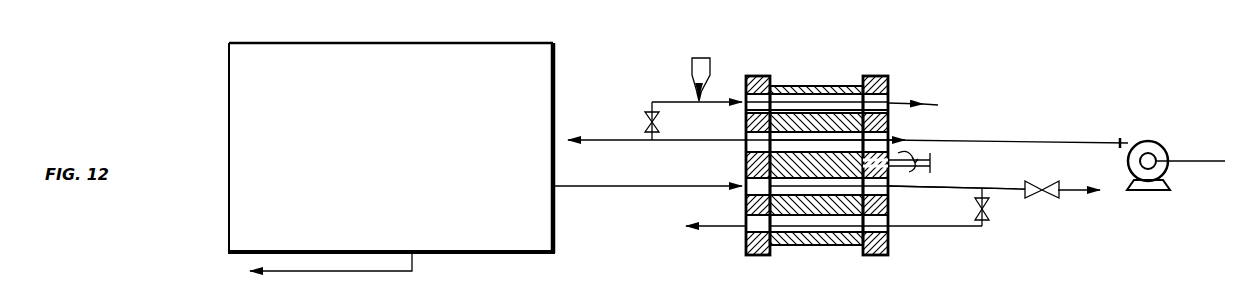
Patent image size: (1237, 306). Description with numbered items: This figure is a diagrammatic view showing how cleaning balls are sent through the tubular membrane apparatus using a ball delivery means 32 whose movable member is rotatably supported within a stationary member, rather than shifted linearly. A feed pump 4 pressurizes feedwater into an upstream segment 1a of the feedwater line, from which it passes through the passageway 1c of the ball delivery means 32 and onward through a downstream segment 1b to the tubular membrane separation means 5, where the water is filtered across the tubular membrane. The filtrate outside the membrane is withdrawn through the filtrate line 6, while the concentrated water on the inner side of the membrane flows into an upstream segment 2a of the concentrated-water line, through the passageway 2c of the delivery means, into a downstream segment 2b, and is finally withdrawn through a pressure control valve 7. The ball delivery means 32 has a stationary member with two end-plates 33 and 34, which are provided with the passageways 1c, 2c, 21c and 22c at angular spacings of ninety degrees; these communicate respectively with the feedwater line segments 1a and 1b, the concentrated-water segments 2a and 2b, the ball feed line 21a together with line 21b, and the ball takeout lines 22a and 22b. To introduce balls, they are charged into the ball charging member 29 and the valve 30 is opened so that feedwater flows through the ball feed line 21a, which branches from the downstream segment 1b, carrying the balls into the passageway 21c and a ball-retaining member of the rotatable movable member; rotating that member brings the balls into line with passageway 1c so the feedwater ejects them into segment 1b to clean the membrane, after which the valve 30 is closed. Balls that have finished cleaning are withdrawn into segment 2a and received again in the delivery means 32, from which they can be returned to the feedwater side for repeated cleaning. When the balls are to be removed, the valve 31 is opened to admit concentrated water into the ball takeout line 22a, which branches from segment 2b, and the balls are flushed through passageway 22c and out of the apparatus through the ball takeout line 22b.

The tubular membrane separation means 5 is at (226, 60).
The filtrate line 6 is at (353, 273).
The downstream segment of the feedwater line 1b is at (599, 140).
The valve 30 is at (646, 112).
The ball feed line 21a is at (673, 100).
The ball charging member 29 is at (711, 70).
The ball delivery means 32 is at (825, 84).
The end-plate 33 is at (765, 76).
The end-plate 34 is at (880, 76).
The passageway 21c is at (888, 96).
The line communicating with the ball feed passageway 21b is at (928, 107).
The passageway 1c is at (886, 134).
The upstream segment of the feedwater line 1a is at (1060, 143).
The feed pump 4 is at (1160, 147).
The upstream segment of the concentrated-water line 2a is at (597, 189).
The passageway 2c is at (887, 197).
The downstream segment of the concentrated-water line 2b is at (1014, 190).
The pressure control valve 7 is at (1045, 199).
The valve 31 is at (986, 212).
The ball takeout line 22a is at (926, 229).
The passageway 22c is at (860, 252).
The ball takeout line 22b is at (720, 228).